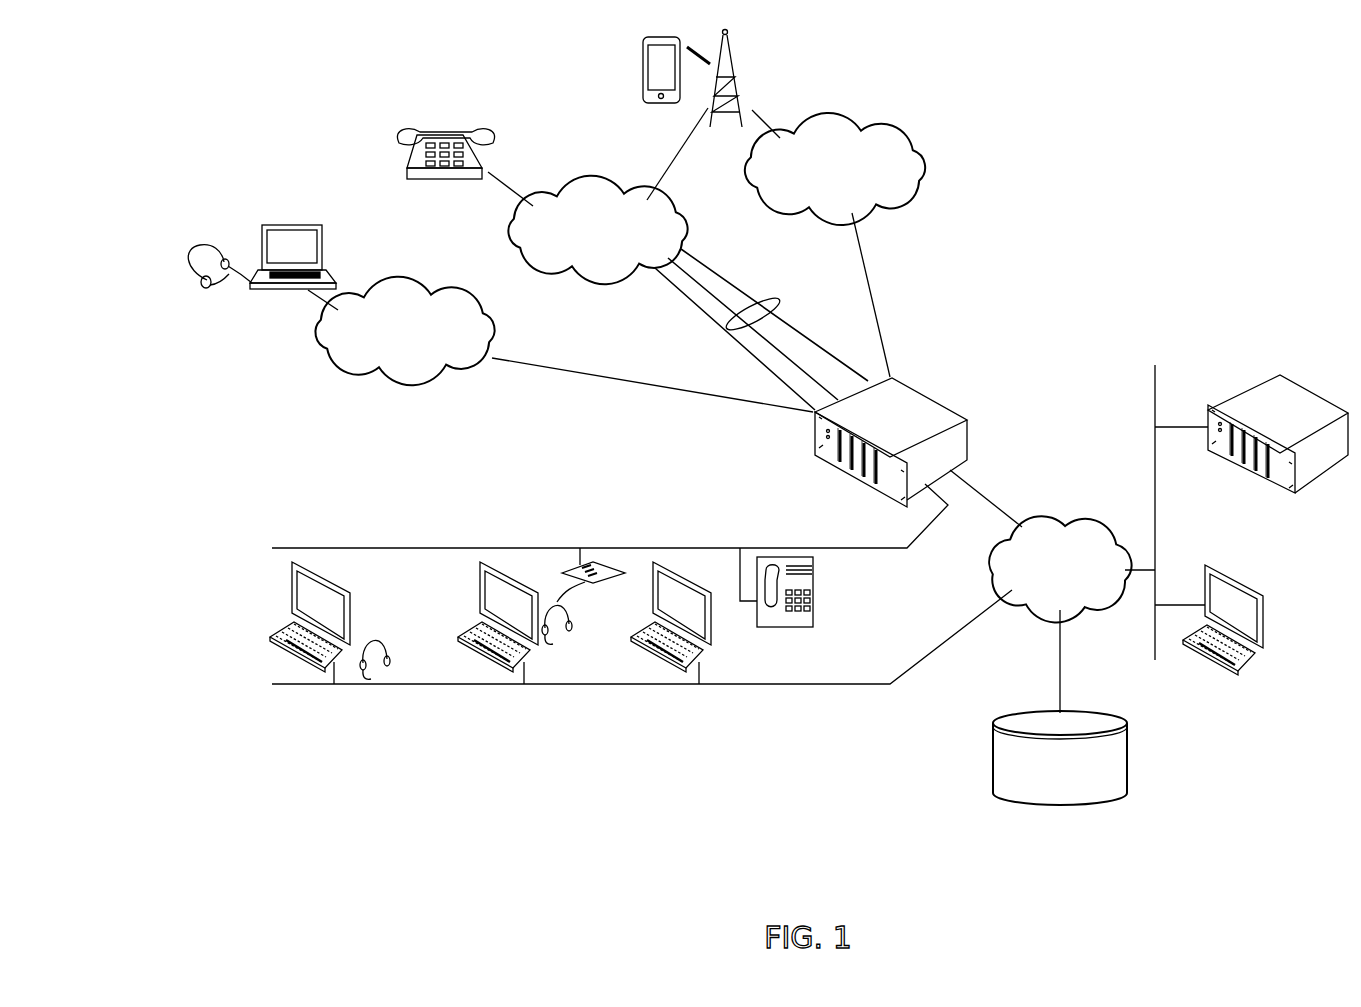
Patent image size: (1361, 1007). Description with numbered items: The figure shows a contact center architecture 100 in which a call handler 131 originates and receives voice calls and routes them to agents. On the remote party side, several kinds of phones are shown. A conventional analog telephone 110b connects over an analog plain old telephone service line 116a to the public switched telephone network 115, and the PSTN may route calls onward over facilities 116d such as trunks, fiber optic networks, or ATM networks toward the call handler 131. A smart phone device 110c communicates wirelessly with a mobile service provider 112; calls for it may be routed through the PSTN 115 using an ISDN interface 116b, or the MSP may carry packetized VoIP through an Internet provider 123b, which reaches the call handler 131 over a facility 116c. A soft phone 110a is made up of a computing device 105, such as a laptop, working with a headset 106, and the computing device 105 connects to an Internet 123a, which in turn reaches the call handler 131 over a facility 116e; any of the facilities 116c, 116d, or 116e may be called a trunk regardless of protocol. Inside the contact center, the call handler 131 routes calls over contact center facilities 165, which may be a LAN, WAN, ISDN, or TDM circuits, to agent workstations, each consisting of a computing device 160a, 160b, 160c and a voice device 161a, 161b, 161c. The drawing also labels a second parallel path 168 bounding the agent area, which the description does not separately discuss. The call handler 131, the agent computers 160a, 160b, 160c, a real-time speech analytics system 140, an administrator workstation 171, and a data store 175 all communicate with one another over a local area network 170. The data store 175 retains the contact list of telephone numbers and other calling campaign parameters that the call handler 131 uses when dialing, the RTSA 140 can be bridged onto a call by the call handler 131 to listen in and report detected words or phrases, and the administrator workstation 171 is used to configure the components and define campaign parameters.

The contact center architecture 100 is at (1064, 165).
The computing device 105 is at (262, 253).
The headset 106 is at (205, 288).
The soft phone 110a is at (295, 204).
The conventional analog telephone 110b is at (484, 163).
The smart phone device 110c is at (645, 69).
The mobile service provider 112 is at (735, 92).
The public switched telephone network 115 is at (584, 252).
The analog plain old telephone service line 116a is at (515, 192).
The integrated services digital network interface 116b is at (688, 134).
The facility 116c is at (876, 297).
The facilities 116d is at (720, 335).
The facility 116e is at (558, 367).
The Internet 123a is at (388, 353).
The Internet provider 123b is at (818, 194).
The call handler 131 is at (883, 449).
The real-time speech analytics system 140 is at (1271, 436).
The agent computing device 160a is at (352, 610).
The agent computing device 160b is at (538, 604).
The agent computing device 160c is at (710, 607).
The voice device 161a is at (393, 655).
The voice device 161b is at (578, 620).
The voice device 161c is at (797, 628).
The contact center facilities 165 is at (848, 547).
The voice and data facility 168 is at (855, 687).
The local area network 170 is at (1005, 590).
The administrator workstation 171 is at (1268, 615).
The data store 175 is at (1046, 788).